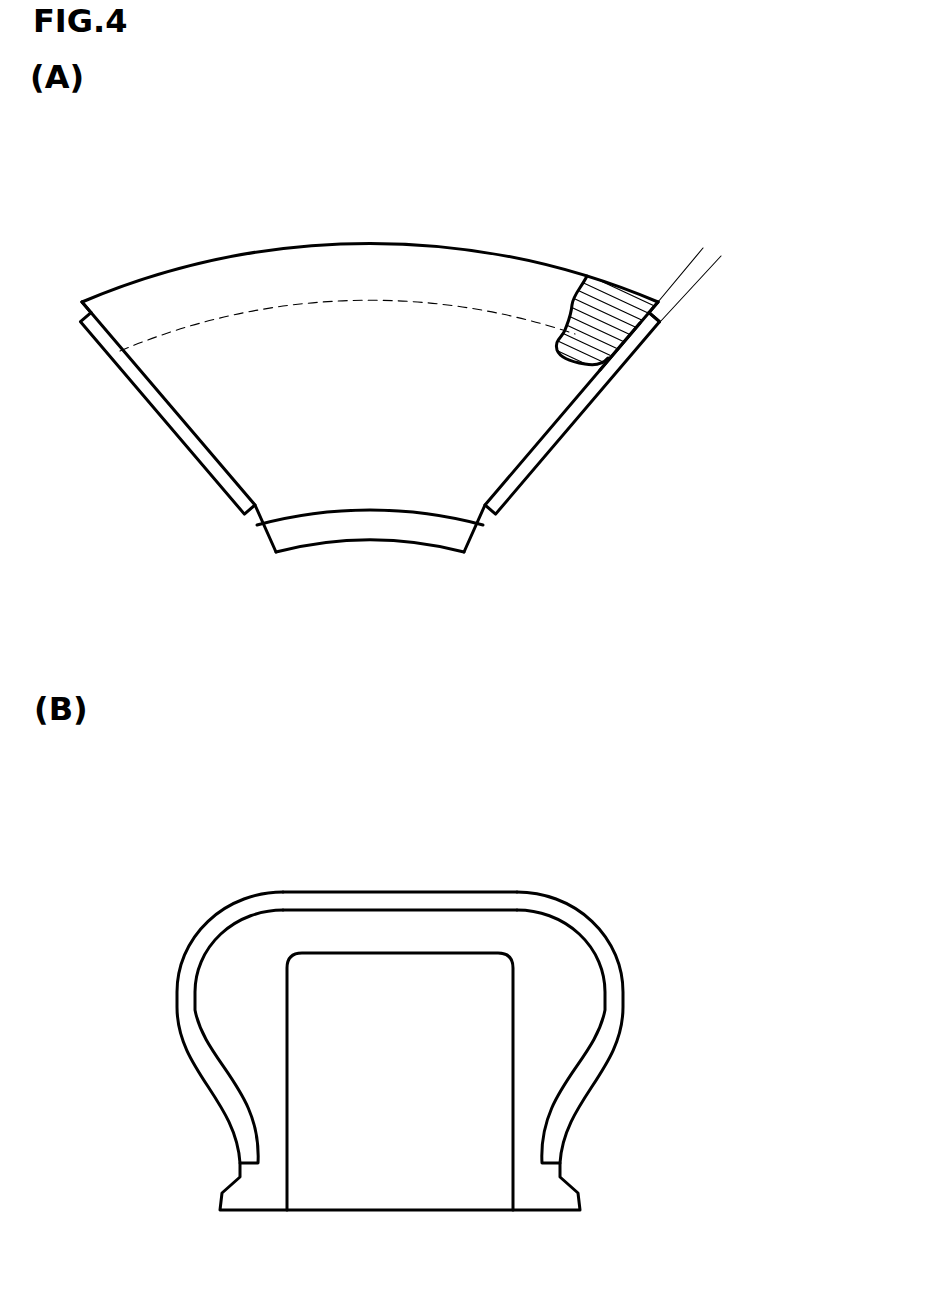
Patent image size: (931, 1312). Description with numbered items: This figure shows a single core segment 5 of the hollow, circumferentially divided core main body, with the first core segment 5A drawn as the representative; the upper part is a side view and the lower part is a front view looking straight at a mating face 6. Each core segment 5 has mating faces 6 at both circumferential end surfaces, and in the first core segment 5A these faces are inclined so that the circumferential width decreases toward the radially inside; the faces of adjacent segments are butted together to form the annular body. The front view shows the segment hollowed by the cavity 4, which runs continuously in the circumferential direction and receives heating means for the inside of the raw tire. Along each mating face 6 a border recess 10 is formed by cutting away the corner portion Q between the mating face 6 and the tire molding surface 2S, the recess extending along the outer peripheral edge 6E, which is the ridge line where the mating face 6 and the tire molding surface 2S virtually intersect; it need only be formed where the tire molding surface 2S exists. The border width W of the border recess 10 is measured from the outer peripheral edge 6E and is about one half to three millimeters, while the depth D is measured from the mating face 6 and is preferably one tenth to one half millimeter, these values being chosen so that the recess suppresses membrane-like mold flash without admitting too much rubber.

The tire molding surface 2S is at (290, 243).
The core segment 5 is at (370, 677).
The first core segment 5A is at (370, 530).
The mating face 6 is at (562, 438).
The outer peripheral edge 6E is at (662, 307).
The border recess 10 is at (78, 315).
The cavity 4 is at (389, 1096).
The corner portion Q is at (667, 318).
The depth of the border recess D is at (673, 235).
The border width W is at (658, 310).